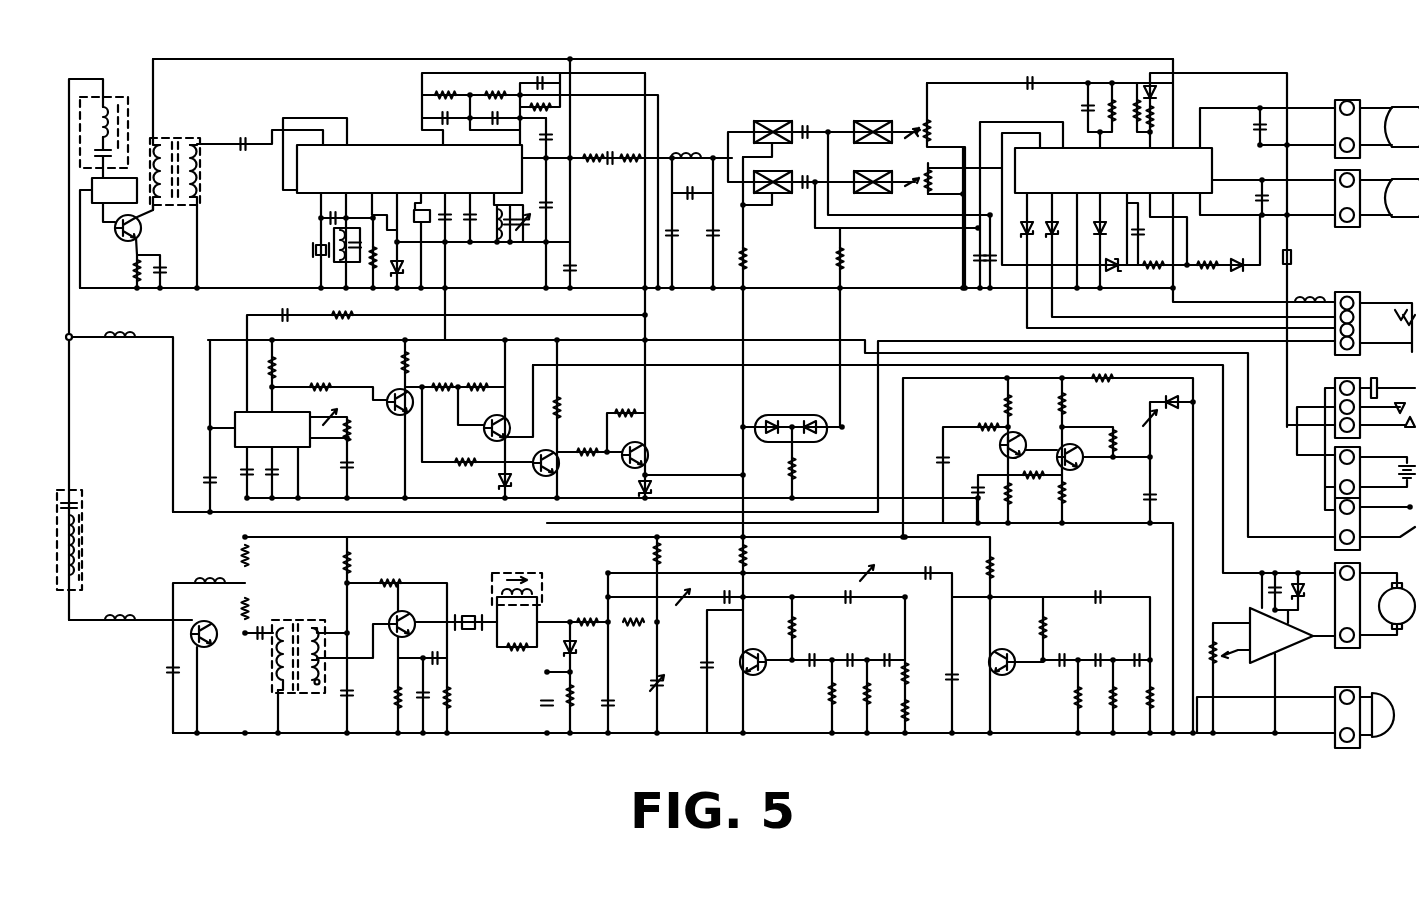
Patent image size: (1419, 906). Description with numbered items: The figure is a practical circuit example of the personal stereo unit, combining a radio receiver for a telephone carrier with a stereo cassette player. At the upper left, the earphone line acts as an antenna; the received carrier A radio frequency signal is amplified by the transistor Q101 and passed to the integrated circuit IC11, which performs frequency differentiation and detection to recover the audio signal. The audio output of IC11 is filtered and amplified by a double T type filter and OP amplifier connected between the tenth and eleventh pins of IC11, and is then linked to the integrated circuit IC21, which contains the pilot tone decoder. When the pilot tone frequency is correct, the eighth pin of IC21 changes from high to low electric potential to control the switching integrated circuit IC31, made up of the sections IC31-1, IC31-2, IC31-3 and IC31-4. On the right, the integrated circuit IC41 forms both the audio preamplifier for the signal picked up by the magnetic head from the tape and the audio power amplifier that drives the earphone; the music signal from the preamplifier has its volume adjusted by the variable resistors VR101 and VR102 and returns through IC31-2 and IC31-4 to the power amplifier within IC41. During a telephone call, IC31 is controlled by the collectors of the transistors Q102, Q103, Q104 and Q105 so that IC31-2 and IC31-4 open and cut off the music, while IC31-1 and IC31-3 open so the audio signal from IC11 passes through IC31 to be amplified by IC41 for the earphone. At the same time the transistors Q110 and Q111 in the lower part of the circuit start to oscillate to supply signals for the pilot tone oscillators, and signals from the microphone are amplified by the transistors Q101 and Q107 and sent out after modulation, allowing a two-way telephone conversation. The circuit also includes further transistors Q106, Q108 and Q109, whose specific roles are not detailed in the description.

The transistor Q101 is at (156, 233).
The transistor Q102 is at (391, 389).
The transistor Q103 is at (486, 417).
The transistor Q104 is at (574, 472).
The transistor Q105 is at (665, 454).
The transistor Q106 is at (988, 448).
The transistor Q107 is at (1091, 473).
The transistor Q108 is at (222, 651).
The transistor Q109 is at (395, 613).
The transistor Q110 is at (771, 677).
The transistor Q111 is at (1019, 676).
The integrated circuit IC11 is at (409, 169).
The integrated circuit IC21 is at (272, 429).
The integrated circuit IC31 is at (823, 163).
The integrated circuit IC31-1 is at (750, 118).
The integrated circuit IC31-2 is at (887, 122).
The integrated circuit IC31-3 is at (778, 201).
The integrated circuit IC31-4 is at (896, 194).
The integrated circuit IC41 is at (1113, 170).
The variable resistor VR101 is at (949, 185).
The variable resistor VR102 is at (942, 196).